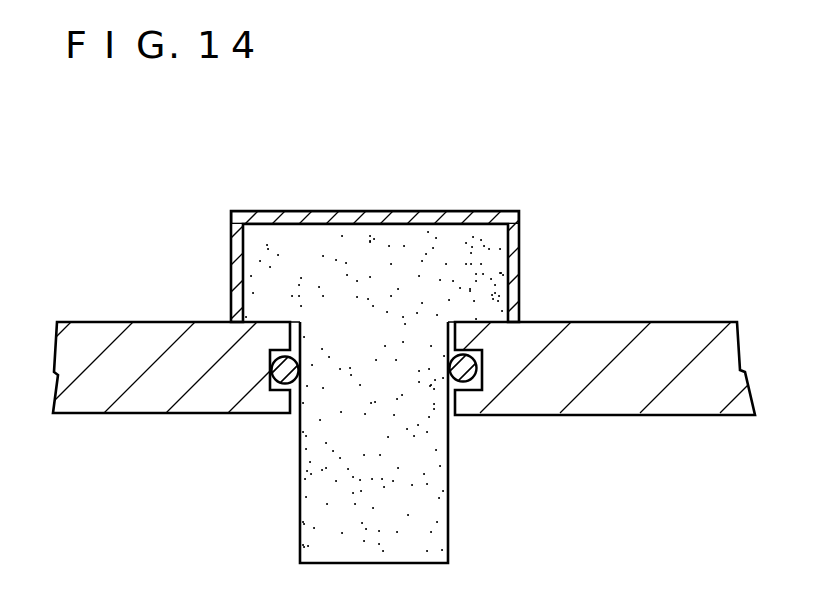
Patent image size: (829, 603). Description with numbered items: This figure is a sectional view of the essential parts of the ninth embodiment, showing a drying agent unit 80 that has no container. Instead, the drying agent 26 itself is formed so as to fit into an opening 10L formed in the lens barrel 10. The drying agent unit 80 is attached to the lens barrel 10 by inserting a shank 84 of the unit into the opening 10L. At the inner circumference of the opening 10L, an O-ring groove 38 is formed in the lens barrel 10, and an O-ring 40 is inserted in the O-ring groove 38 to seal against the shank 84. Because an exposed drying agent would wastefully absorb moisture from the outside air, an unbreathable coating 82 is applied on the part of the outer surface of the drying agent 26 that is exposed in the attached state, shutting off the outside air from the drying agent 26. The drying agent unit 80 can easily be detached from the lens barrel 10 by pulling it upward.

The lens barrel 10 is at (626, 330).
The opening 10L is at (450, 430).
The drying agent 26 is at (437, 506).
The O-ring groove 38 is at (473, 392).
The O-ring 40 is at (303, 366).
The drying agent unit 80 is at (247, 211).
The unbreathable coating 82 is at (470, 217).
The shank 84 is at (300, 478).